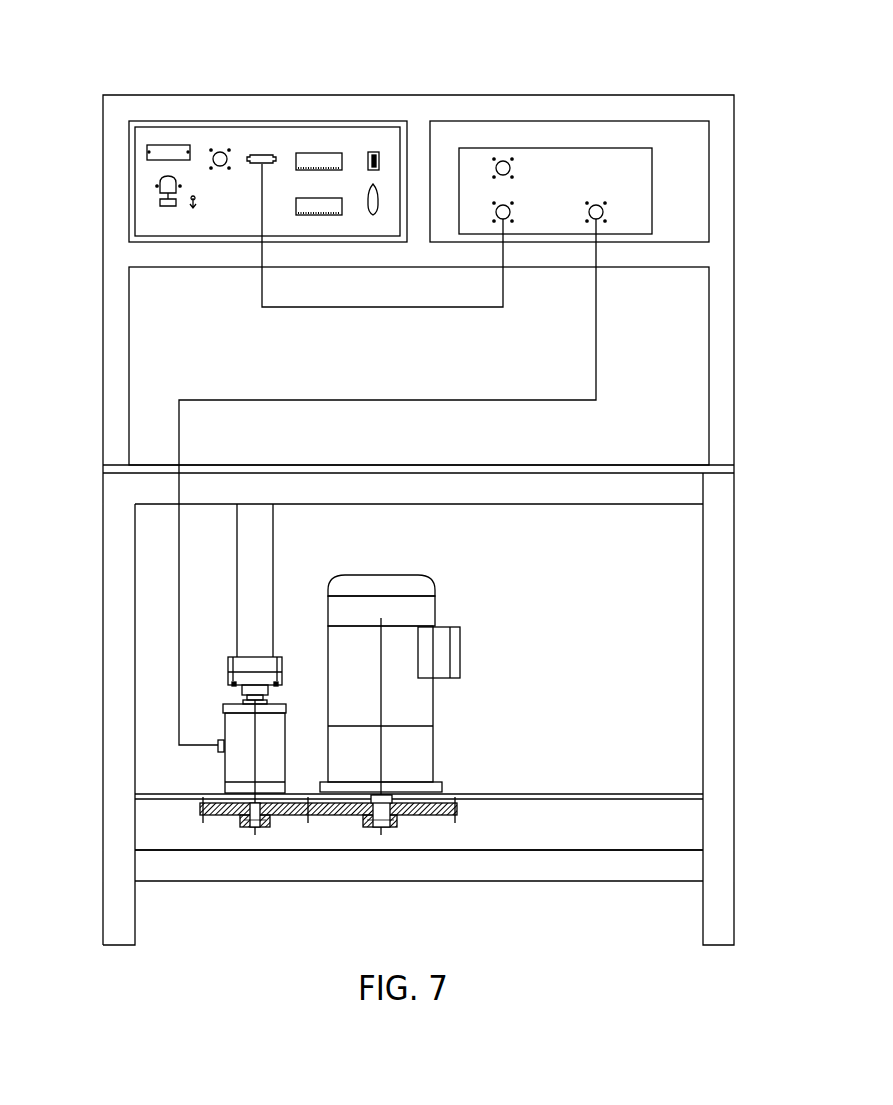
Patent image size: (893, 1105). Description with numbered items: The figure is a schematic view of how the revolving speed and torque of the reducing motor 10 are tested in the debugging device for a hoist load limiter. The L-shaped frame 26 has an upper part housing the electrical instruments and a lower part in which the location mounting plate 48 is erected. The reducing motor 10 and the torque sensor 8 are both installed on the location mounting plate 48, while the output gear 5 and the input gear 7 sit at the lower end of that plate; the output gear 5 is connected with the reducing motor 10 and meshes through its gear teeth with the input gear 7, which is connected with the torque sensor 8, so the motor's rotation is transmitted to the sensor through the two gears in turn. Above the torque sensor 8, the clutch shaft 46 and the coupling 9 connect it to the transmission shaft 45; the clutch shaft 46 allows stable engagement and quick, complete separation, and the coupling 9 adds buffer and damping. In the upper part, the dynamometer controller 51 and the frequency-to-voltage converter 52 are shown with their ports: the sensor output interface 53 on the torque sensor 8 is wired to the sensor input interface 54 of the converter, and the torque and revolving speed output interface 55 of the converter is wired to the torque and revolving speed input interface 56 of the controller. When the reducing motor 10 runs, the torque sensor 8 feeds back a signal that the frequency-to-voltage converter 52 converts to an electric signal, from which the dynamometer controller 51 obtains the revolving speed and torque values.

The output gear 5 is at (342, 810).
The input gear 7 is at (203, 811).
The torque sensor 8 is at (257, 745).
The coupling 9 is at (258, 666).
The reducing motor 10 is at (374, 645).
The frame 26 is at (716, 745).
The transmission shaft 45 is at (258, 530).
The clutch shaft 46 is at (250, 678).
The location mounting plate 48 is at (563, 802).
The dynamometer controller 51 is at (219, 140).
The frequency-to-voltage converter 52 is at (528, 164).
The sensor output interface 53 is at (218, 746).
The sensor input interface 54 is at (597, 207).
The torque and revolving speed output interface 55 is at (503, 207).
The torque and revolving speed input interface 56 is at (265, 157).